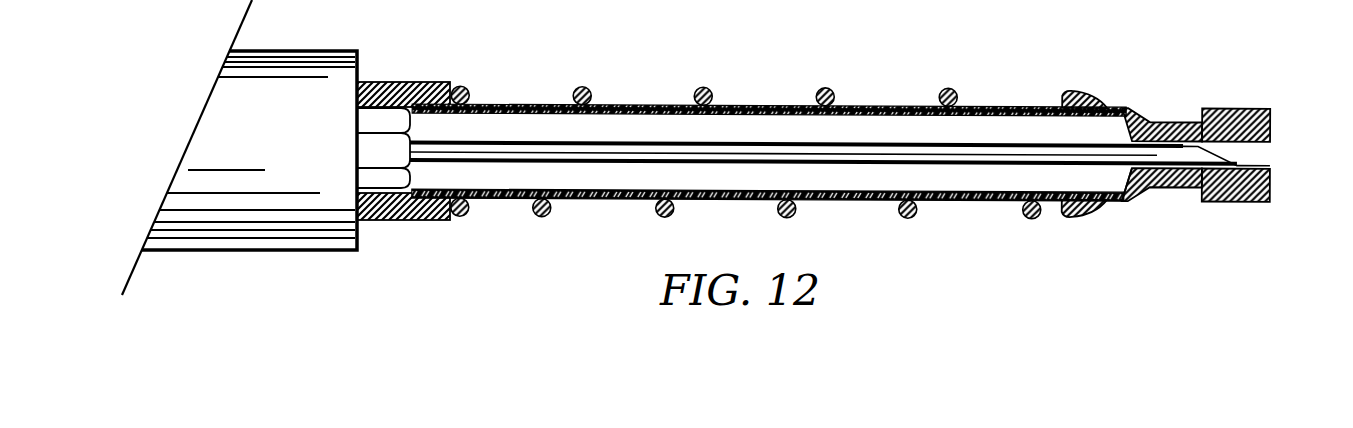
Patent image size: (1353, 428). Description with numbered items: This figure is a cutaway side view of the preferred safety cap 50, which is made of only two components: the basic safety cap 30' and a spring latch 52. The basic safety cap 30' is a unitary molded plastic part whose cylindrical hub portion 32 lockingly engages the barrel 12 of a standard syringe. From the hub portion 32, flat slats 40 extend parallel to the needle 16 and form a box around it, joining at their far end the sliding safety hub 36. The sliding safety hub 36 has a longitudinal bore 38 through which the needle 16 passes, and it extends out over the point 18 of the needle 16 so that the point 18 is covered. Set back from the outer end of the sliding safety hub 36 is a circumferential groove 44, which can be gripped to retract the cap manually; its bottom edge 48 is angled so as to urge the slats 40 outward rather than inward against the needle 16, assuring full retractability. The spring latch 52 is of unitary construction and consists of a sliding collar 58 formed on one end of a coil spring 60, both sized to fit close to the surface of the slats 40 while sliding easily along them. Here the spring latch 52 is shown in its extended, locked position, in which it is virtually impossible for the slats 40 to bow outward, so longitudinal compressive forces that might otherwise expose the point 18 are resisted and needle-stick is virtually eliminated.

The barrel 12 is at (228, 118).
The needle 16 is at (1100, 145).
The point 18 is at (1270, 165).
The basic safety cap 30' is at (768, 226).
The cylindrical hub portion 32 is at (377, 219).
The sliding safety hub 36 is at (1237, 110).
The longitudinal bore 38 is at (1258, 152).
The flat slats 40 is at (507, 104).
The circumferential groove 44 is at (1182, 197).
The bottom edge 48 is at (1147, 188).
The safety cap 50 is at (735, 82).
The spring latch 52 is at (847, 93).
The sliding collar 58 is at (1096, 175).
The coil spring 60 is at (910, 220).